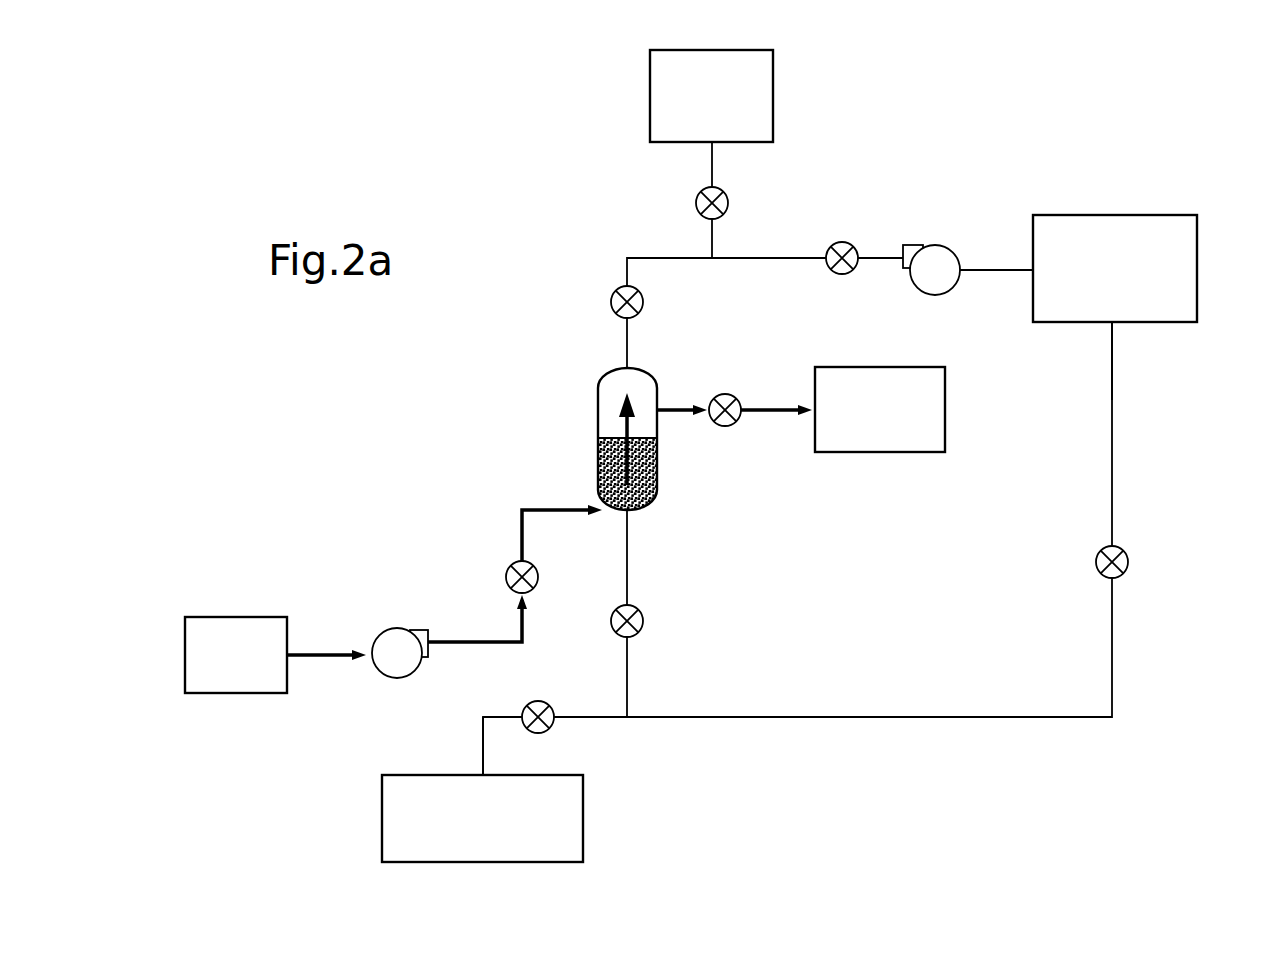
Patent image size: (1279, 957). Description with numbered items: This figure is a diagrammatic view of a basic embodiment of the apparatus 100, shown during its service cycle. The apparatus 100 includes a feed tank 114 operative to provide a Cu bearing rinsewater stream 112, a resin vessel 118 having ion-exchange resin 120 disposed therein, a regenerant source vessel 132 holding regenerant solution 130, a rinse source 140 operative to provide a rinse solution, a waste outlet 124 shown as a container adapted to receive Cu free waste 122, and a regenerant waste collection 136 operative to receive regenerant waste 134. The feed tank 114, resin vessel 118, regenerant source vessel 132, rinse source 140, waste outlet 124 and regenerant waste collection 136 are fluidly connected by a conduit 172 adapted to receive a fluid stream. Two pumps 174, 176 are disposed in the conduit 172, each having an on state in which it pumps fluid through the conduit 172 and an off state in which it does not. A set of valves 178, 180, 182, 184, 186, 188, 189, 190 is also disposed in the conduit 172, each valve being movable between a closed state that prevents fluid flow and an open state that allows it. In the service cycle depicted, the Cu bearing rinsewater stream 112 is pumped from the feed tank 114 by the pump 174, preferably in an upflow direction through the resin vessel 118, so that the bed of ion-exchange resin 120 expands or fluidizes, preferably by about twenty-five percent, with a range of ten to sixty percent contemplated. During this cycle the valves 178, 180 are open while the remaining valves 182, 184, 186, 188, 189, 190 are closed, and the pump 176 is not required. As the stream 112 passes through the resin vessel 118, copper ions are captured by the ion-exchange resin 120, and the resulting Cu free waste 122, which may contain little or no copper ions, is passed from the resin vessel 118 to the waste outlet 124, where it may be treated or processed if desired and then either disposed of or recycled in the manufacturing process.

The apparatus 100 is at (540, 242).
The Cu bearing rinsewater stream 112 is at (325, 637).
The feed tank 114 is at (217, 617).
The resin vessel 118 is at (637, 455).
The ion-exchange resin 120 is at (597, 460).
The Cu free waste 122 is at (777, 393).
The waste outlet 124 is at (885, 452).
The regenerant solution 130 is at (1173, 321).
The regenerant source vessel 132 is at (1125, 215).
The regenerant waste 134 is at (575, 801).
The regenerant waste collection 136 is at (583, 835).
The rinse source 140 is at (773, 77).
The conduit 172 is at (637, 232).
The pump 174 is at (395, 676).
The pump 176 is at (935, 280).
The valve 178 is at (510, 567).
The valve 180 is at (725, 393).
The valve 182 is at (612, 306).
The valve 184 is at (644, 617).
The valve 186 is at (548, 729).
The valve 188 is at (728, 205).
The valve 189 is at (842, 275).
The valve 190 is at (1128, 560).